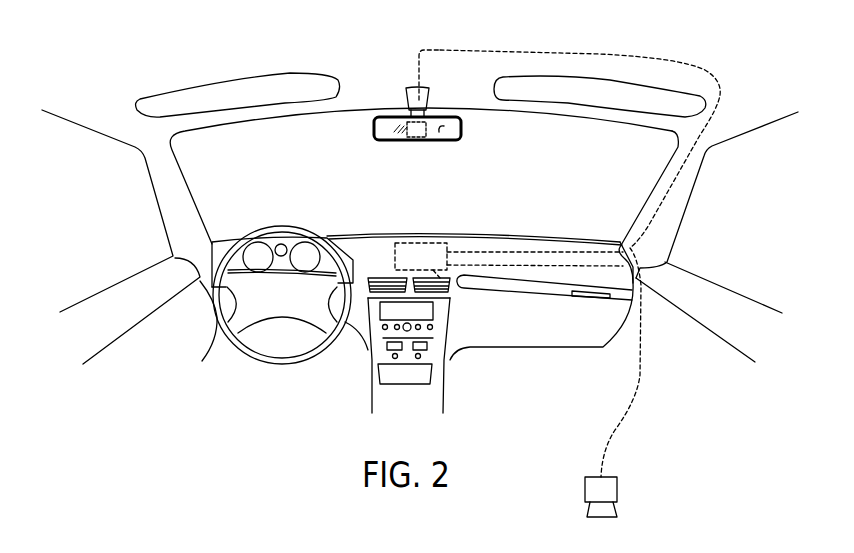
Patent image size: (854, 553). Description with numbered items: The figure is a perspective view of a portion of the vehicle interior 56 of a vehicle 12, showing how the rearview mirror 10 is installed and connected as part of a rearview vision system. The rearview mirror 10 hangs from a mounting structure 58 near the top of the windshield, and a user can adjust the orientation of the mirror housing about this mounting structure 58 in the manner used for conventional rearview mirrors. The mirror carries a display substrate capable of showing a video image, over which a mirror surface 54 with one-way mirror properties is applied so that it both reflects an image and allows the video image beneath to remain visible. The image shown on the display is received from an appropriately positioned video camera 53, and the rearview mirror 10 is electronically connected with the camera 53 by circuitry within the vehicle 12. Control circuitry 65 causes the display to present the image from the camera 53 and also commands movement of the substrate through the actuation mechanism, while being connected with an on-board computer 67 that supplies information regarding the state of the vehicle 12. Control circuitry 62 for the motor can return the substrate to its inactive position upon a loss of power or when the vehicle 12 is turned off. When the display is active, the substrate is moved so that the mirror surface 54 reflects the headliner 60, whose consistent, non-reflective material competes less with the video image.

The rearview mirror 10 is at (476, 133).
The vehicle 12 is at (137, 55).
The video camera 53 is at (617, 487).
The mirror surface 54 is at (441, 128).
The vehicle interior 56 is at (660, 166).
The mounting structure 58 is at (411, 112).
The headliner 60 is at (398, 38).
The control circuitry 62 is at (417, 143).
The control circuitry 65 is at (604, 58).
The on-board computer 67 is at (453, 297).